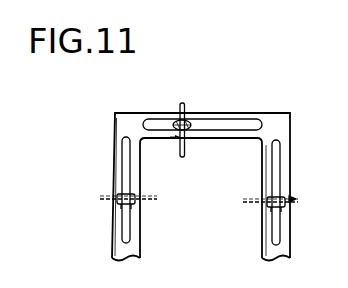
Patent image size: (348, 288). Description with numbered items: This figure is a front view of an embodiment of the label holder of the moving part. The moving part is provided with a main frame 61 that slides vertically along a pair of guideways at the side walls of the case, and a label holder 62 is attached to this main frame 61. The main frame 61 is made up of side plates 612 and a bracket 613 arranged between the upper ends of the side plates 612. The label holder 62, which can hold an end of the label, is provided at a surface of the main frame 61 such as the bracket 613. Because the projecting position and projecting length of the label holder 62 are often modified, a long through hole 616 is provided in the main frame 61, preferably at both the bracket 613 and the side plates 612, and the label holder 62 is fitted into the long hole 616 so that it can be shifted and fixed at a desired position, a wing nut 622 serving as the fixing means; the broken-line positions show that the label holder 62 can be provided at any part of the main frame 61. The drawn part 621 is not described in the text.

The main frame 61 is at (115, 127).
The label holder 62 is at (212, 127).
The bolt shank 621 is at (184, 157).
The wing nut 622 is at (187, 114).
The side plates 612 is at (272, 229).
The bracket 613 is at (219, 139).
The long through hole 616 is at (243, 126).